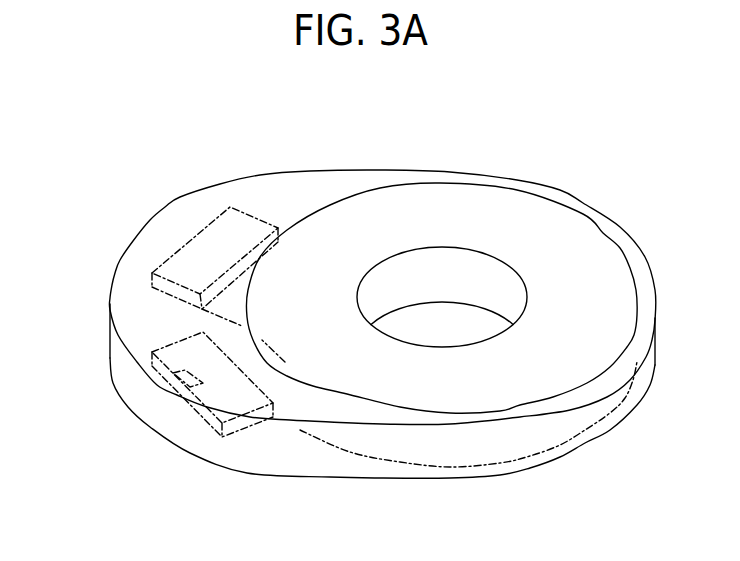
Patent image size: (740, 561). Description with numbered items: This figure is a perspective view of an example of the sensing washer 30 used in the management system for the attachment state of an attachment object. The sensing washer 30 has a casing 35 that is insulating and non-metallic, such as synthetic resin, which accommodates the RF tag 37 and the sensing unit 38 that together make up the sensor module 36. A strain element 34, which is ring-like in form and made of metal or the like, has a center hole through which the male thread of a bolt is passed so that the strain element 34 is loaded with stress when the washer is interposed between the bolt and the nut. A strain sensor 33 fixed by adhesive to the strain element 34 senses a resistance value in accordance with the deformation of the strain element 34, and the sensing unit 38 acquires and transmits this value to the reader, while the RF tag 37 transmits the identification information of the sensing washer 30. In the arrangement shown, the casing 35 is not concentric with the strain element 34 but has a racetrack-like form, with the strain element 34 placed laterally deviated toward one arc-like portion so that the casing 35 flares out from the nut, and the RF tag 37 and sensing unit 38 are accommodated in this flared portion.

The sensing washer 30 is at (353, 322).
The strain sensor 33 is at (293, 438).
The strain element 34 is at (441, 311).
The casing 35 is at (382, 272).
The sensor module 36 is at (111, 292).
The RF tag 37 is at (176, 399).
The sensing unit 38 is at (209, 247).